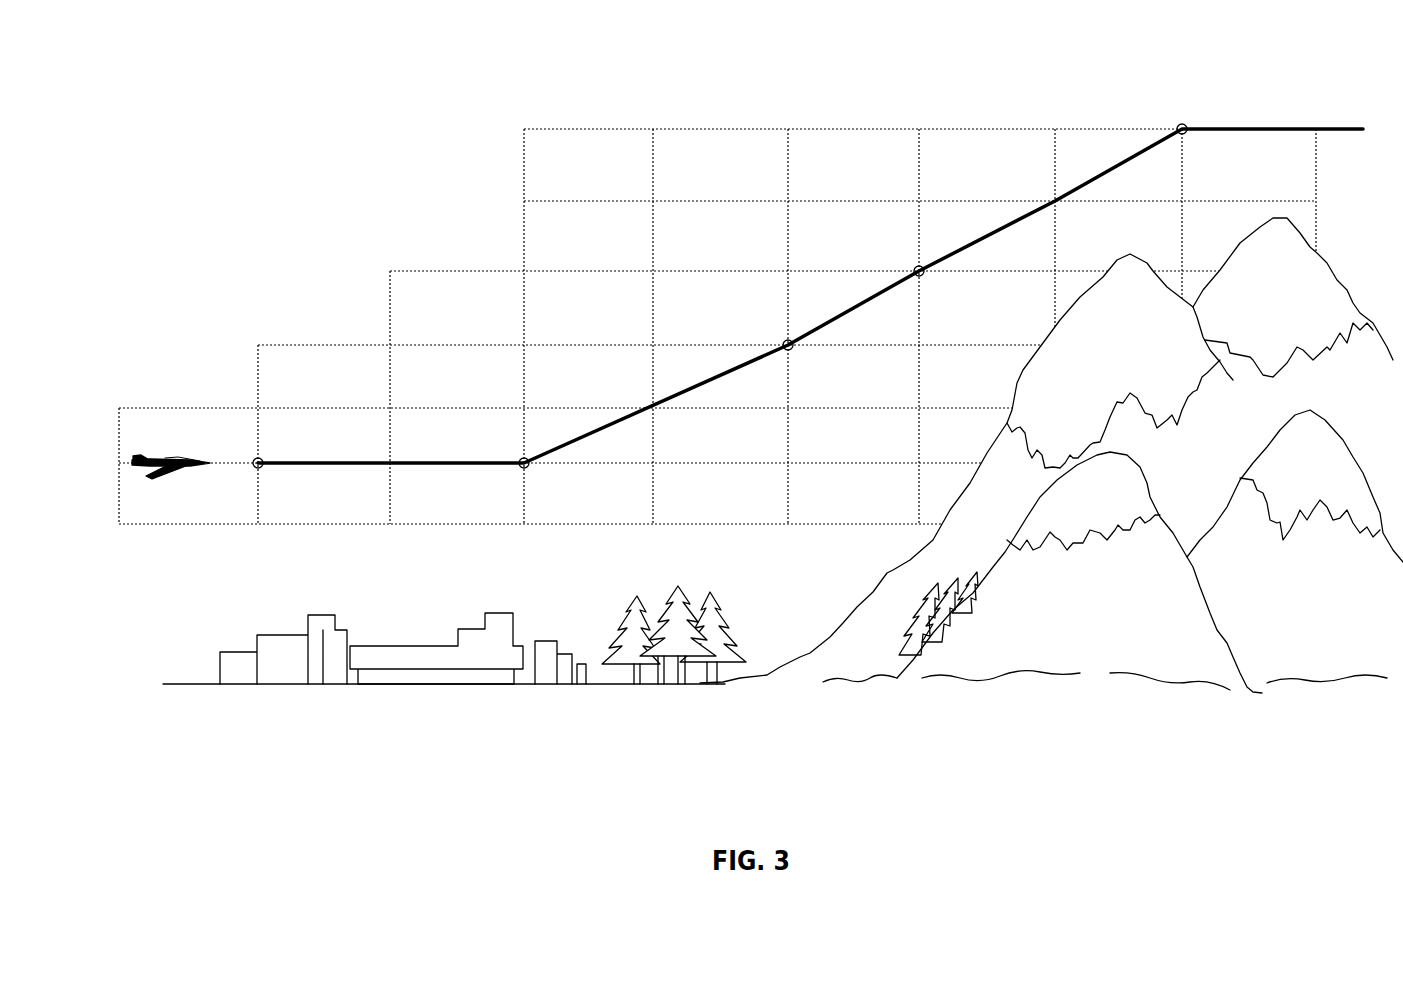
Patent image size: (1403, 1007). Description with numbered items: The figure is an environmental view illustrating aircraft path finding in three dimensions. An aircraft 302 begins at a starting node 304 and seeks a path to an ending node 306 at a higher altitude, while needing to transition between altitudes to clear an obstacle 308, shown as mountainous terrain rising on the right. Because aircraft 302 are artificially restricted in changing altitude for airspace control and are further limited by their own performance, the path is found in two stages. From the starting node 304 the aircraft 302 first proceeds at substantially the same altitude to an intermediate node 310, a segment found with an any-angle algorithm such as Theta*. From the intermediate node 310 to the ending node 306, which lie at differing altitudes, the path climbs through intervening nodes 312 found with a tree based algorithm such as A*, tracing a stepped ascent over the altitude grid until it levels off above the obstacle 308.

The aircraft 302 is at (160, 470).
The starting node 304 is at (256, 458).
The ending node 306 is at (1185, 127).
The obstacle 308 is at (1343, 308).
The intermediate node 310 is at (524, 468).
The intervening nodes 312 is at (786, 342).